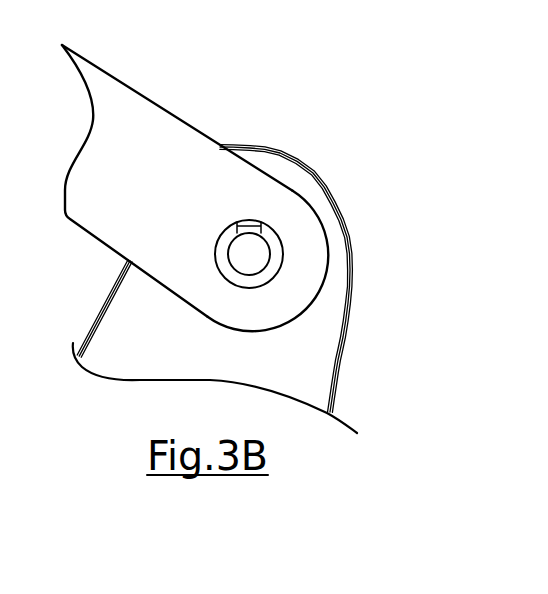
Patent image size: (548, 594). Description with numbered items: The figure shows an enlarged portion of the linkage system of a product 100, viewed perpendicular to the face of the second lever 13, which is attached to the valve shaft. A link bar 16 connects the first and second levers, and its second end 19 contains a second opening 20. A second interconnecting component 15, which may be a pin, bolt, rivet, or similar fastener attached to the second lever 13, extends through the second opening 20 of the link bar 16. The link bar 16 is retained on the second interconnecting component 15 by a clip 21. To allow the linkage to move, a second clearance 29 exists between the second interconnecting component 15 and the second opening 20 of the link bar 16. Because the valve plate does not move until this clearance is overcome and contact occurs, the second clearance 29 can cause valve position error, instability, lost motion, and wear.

The product 100 is at (357, 112).
The link bar 16 is at (198, 131).
The second end 19 is at (305, 308).
The clips 21 is at (284, 256).
The second interconnecting component 15 is at (251, 263).
The second opening 20 is at (243, 220).
The second clearance 29 is at (255, 222).
The second lever 13 is at (105, 303).